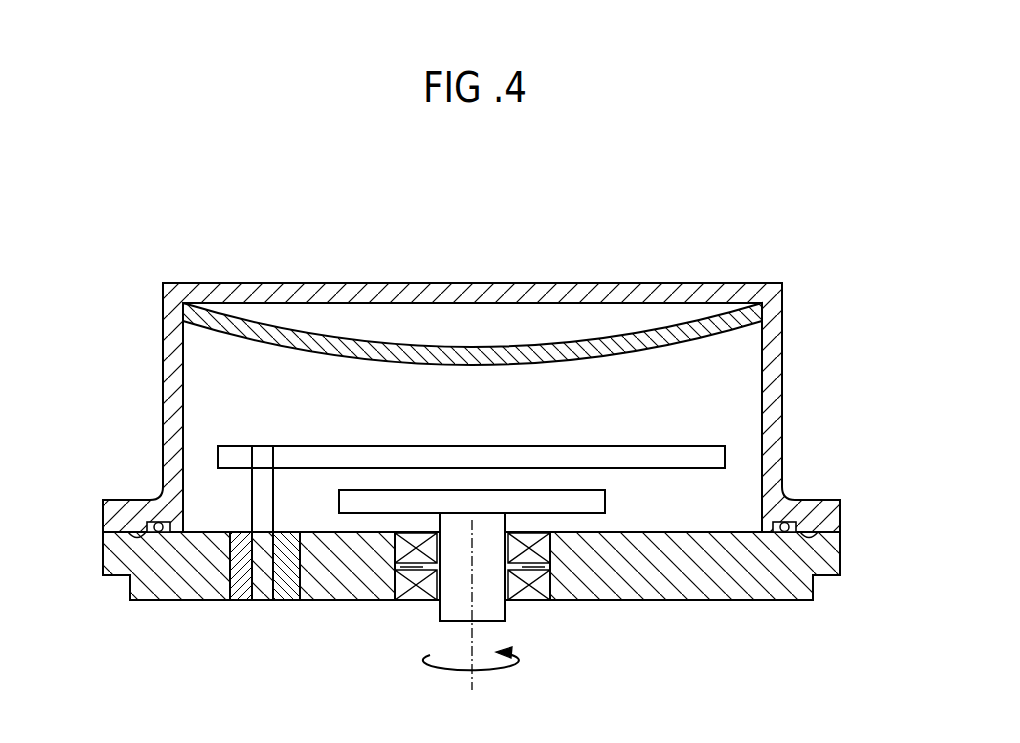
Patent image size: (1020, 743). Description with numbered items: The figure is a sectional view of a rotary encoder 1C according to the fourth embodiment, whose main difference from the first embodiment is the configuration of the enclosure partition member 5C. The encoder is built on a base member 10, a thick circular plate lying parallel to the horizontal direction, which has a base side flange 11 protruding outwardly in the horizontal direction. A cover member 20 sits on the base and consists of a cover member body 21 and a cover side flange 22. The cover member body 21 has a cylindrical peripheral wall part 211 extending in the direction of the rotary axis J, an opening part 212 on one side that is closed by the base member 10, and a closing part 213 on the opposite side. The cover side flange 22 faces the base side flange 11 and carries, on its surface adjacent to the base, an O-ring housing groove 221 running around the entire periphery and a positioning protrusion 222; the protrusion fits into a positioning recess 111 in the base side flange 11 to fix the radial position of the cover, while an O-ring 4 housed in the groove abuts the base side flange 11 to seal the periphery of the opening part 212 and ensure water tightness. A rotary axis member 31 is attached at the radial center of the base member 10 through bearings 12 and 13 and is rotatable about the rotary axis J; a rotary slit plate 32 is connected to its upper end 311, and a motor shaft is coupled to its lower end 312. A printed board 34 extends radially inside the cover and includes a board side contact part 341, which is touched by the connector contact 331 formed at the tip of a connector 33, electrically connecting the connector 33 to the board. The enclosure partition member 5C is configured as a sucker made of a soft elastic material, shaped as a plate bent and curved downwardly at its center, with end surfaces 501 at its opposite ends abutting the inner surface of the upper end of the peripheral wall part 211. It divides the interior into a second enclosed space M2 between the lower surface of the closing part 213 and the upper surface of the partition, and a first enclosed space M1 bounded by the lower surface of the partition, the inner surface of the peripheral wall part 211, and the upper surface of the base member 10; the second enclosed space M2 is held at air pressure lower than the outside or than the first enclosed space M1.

The rotary encoder 1C is at (800, 231).
The enclosure partition member 5C is at (324, 334).
The closing part 213 is at (497, 291).
The first enclosed space M1 is at (637, 395).
The second enclosed space M2 is at (597, 327).
The end surfaces 501 is at (183, 304).
The peripheral wall part 211 is at (176, 440).
The opening part 212 is at (759, 534).
The cover member body 21 is at (170, 430).
The cover side flange 22 is at (140, 510).
The cover member 20 is at (92, 424).
The O-ring housing groove 221 is at (149, 535).
The positioning protrusion 222 is at (138, 539).
The positioning recess 111 is at (132, 536).
The base side flange 11 is at (115, 559).
The base member 10 is at (790, 610).
The O-ring 4 is at (160, 534).
The connector 33 is at (252, 578).
The connector contact 331 is at (276, 473).
The board side contact part 341 is at (272, 458).
The printed board 34 is at (677, 468).
The rotary slit plate 32 is at (606, 500).
The bearing 12 is at (392, 548).
The bearing 13 is at (400, 603).
The rotary axis member 31 is at (442, 608).
The upper end 311 is at (487, 513).
The lower end 312 is at (447, 624).
The rotary axis J is at (474, 678).